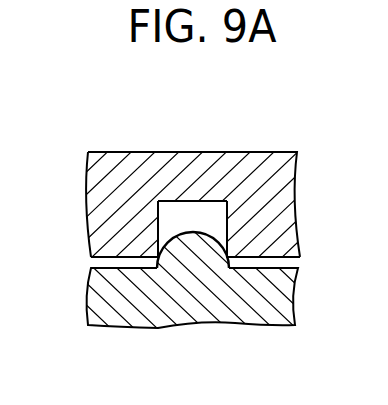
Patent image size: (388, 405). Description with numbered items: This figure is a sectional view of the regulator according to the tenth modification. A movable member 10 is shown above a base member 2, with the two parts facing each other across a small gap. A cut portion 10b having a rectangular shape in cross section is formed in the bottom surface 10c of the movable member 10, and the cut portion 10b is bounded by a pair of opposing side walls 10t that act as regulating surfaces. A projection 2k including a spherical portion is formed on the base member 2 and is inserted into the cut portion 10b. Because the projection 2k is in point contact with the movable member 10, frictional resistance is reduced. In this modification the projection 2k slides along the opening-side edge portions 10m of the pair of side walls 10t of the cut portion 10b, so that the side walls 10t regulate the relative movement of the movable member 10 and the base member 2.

The movable member 10 is at (262, 168).
The cut portion 10b is at (158, 212).
The side walls 10t is at (227, 223).
The bottom surface 10c is at (283, 258).
The opening-side edge portions 10m is at (162, 260).
The base member 2 is at (262, 312).
The projection 2k is at (167, 244).